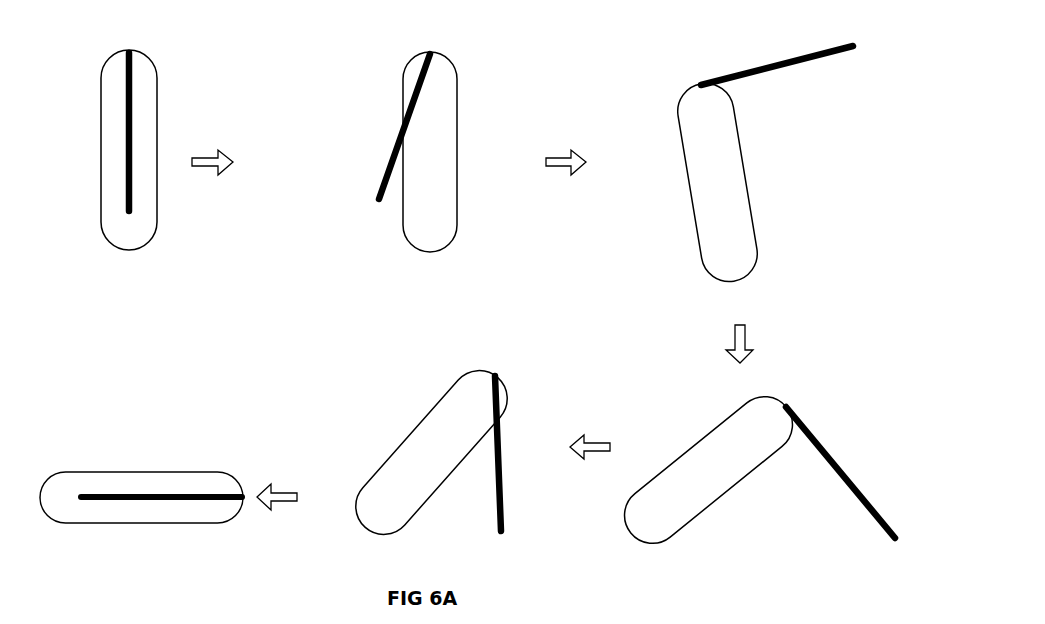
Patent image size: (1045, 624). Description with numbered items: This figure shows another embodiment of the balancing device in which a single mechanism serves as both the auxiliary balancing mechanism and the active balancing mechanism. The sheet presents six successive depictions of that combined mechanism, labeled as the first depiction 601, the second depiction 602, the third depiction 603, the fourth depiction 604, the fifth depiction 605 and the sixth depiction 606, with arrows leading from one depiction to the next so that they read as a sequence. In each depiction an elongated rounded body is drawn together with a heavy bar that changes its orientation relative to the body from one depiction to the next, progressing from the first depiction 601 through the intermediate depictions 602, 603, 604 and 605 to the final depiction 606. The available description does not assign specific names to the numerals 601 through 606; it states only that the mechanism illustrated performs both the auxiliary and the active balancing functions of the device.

The hinged device in closed/initial position 601 is at (129, 129).
The hinged device with arm partially opened 602 is at (418, 129).
The hinged device with arm rotated outward 603 is at (760, 145).
The hinged device rotated with arm extended downward 604 is at (754, 447).
The hinged device with arm swung toward vertical 605 is at (431, 444).
The hinged device in horizontal folded position 606 is at (141, 434).